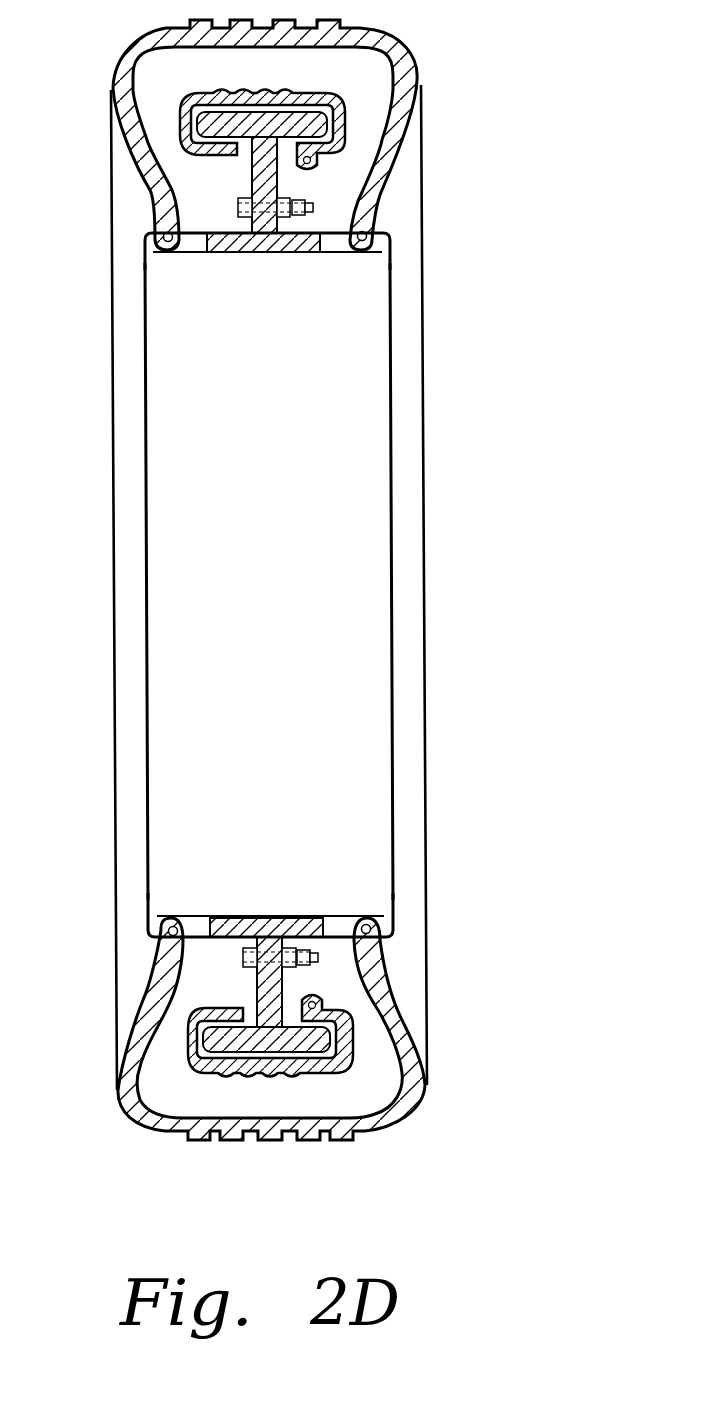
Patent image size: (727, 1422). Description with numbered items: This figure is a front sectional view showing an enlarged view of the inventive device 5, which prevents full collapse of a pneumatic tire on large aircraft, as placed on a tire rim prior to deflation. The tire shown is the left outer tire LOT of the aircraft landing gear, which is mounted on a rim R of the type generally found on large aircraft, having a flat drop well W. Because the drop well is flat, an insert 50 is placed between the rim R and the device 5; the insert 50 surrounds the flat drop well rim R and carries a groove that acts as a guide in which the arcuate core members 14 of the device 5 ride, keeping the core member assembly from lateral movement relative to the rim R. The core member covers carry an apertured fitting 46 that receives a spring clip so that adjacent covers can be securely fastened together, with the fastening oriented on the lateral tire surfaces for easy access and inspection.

The device 5 is at (232, 953).
The core member 14 is at (247, 974).
The apertured fitting 46 is at (350, 1000).
The insert 50 is at (300, 922).
The rim R is at (365, 420).
The flat drop well W is at (268, 886).
The left outer tire LOT is at (463, 992).